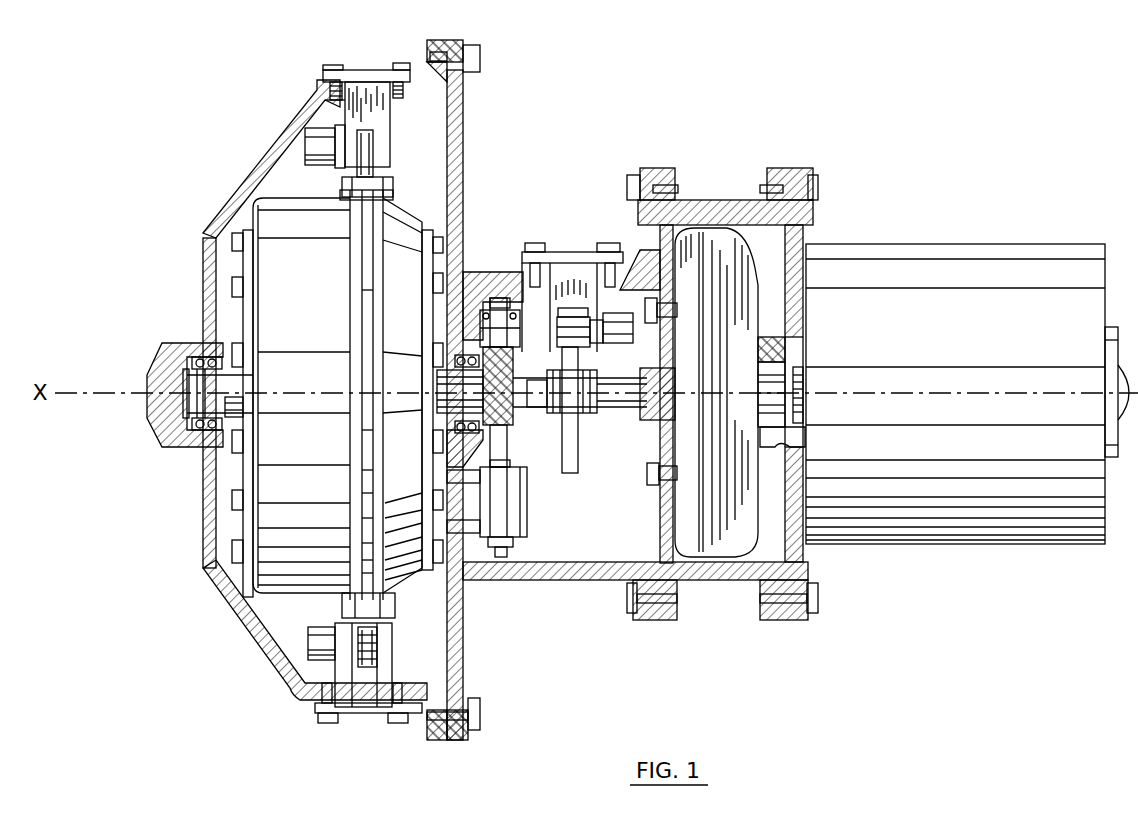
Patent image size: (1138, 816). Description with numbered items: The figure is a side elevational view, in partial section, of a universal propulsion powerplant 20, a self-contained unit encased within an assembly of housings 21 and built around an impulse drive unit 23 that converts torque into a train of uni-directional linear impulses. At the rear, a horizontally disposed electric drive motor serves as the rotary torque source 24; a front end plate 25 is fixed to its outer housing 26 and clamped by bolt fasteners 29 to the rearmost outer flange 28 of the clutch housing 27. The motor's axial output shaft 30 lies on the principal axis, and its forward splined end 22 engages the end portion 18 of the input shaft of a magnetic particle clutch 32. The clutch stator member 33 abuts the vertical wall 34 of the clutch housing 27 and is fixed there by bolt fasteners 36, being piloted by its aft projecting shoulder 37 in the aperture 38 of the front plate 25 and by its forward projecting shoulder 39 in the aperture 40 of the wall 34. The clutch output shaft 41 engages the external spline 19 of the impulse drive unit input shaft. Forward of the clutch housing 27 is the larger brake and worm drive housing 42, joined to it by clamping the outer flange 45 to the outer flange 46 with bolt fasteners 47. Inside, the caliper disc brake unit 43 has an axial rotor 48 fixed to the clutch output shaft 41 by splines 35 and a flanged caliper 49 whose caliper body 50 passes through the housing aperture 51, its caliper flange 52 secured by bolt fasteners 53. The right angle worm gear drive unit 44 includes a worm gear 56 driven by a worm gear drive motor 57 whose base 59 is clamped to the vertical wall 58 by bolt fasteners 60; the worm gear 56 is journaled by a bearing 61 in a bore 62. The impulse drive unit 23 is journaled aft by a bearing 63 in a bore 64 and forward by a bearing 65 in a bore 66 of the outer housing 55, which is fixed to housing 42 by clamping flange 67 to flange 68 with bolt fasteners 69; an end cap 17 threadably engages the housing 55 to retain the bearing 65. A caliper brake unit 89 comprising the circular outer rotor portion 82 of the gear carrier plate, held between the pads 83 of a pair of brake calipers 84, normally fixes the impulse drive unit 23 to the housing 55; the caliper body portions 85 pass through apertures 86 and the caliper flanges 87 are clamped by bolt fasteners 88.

The end cap 17 is at (150, 420).
The end portion of the clutch input shaft 18 is at (805, 437).
The external spline 19 is at (530, 408).
The universal propulsion powerplant 20 is at (465, 165).
The assembly of housings 21 is at (247, 160).
The forward splined end of the drive motor output shaft 22 is at (805, 375).
The impulse drive unit 23 is at (245, 628).
The rotary torque source (electric drive motor) 24 is at (1035, 545).
The front end plate 25 is at (797, 620).
The outer housing of the drive motor 26 is at (975, 545).
The clutch housing 27 is at (748, 205).
The rearmost outer flange of the clutch housing 28 is at (772, 620).
The bolt fasteners 29 is at (815, 598).
The axial output shaft of the drive motor 30 is at (787, 364).
The magnetic particle clutch 32 is at (770, 325).
The clutch stator member 33 is at (752, 235).
The vertical wall of the clutch housing 34 is at (627, 580).
The splines 35 is at (593, 413).
The bolt fasteners 36 is at (660, 490).
The aft projecting shoulder of the clutch stator member 37 is at (782, 350).
The aperture of the drive motor front plate 38 is at (773, 343).
The forward projecting shoulder of the clutch stator member 39 is at (650, 430).
The aperture of the clutch housing vertical wall 40 is at (648, 472).
The clutch output shaft 41 is at (640, 383).
The brake and worm drive housing 42 is at (560, 582).
The caliper disc brake unit 43 is at (525, 480).
The worm gear drive unit 44 is at (513, 545).
The outer flange of the clutch housing 45 is at (672, 612).
The outer flange of the brake and worm drive housing 46 is at (655, 620).
The bolt fasteners 47 is at (631, 614).
The axial rotor 48 is at (570, 475).
The flanged caliper 49 is at (567, 275).
The caliper body 50 is at (587, 262).
The housing aperture 51 is at (645, 265).
The caliper flange 52 is at (605, 260).
The bolt fasteners 53 is at (650, 172).
The impulse drive unit outer housing 55 is at (205, 520).
The worm gear 56 is at (514, 375).
The worm gear drive motor 57 is at (497, 550).
The vertical wall of the brake and worm drive housing 58 is at (447, 572).
The worm gear drive motor base 59 is at (463, 590).
The bolt fasteners 60 is at (490, 545).
The bearing 61 is at (457, 300).
The bore 62 is at (470, 320).
The bearing 63 is at (460, 355).
The bore 64 is at (470, 357).
The bearing 65 is at (199, 356).
The bore 66 is at (193, 355).
The flange of the brake and worm drive housing 67 is at (455, 742).
The flange of the impulse drive unit housing 68 is at (437, 742).
The bolt fasteners 69 is at (483, 716).
The circular outer portion of the gear carrier and brake rotor plate 82 is at (360, 690).
The pads 83 is at (380, 645).
The brake calipers 84 is at (315, 167).
The caliper body portions 85 is at (322, 100).
The apertures 86 is at (447, 48).
The caliper flanges 87 is at (370, 68).
The bolt fasteners 88 is at (399, 65).
The caliper brake unit 89 is at (305, 135).